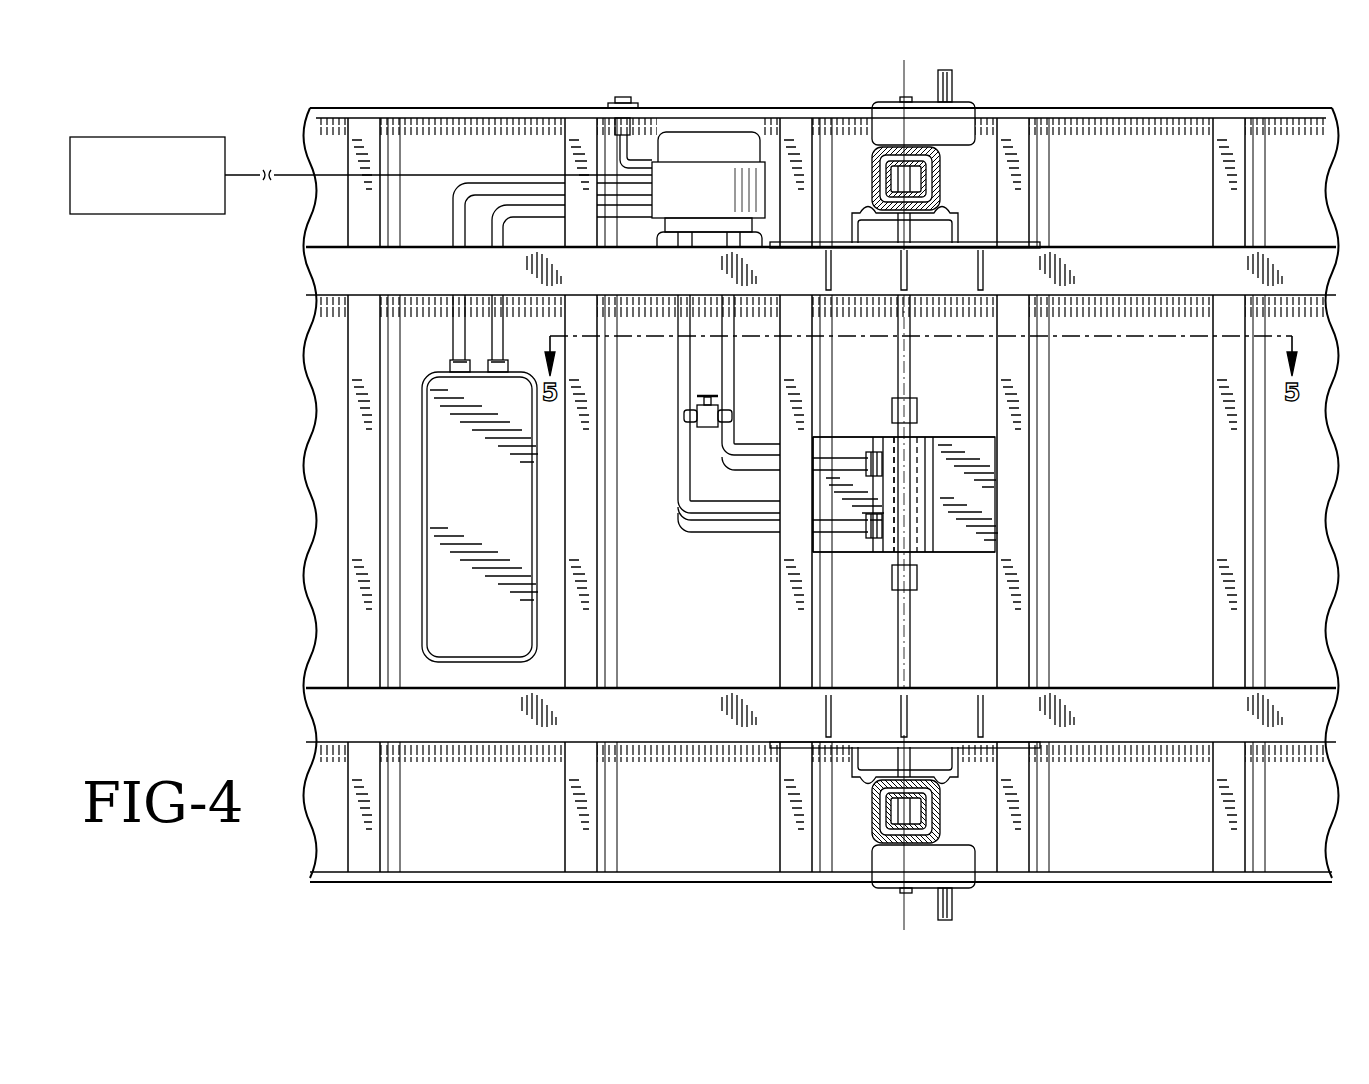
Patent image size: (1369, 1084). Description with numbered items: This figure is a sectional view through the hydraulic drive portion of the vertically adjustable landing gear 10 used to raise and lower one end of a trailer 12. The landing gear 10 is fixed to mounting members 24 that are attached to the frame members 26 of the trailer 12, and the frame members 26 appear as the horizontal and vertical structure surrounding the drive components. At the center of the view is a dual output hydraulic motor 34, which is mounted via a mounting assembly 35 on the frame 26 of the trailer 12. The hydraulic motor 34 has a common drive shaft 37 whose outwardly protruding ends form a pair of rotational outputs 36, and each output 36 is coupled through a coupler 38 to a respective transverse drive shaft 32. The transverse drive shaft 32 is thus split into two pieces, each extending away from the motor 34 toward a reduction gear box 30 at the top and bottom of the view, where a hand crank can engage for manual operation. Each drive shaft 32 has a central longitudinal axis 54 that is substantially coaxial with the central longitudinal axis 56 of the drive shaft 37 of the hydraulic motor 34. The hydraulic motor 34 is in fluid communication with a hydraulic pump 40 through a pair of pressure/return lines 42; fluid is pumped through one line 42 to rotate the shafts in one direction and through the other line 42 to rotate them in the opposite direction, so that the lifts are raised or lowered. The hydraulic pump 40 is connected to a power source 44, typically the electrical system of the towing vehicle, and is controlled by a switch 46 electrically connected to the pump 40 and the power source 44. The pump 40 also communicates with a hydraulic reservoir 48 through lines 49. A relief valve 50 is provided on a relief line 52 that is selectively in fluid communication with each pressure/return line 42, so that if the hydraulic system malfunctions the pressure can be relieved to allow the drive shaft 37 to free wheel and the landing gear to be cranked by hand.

The landing gear 10 is at (246, 113).
The trailer 12 is at (1130, 112).
The mounting members 24 is at (1015, 245).
The frame members 26 is at (1158, 262).
The reduction gear box 30 is at (958, 103).
The transverse drive shaft 32 is at (912, 385).
The dual output hydraulic motor 34 is at (927, 505).
The mounting assembly 35 is at (853, 552).
The rotational outputs 36 is at (913, 432).
The common drive shaft 37 is at (912, 480).
The coupler 38 is at (890, 410).
The hydraulic pump 40 is at (706, 150).
The pressure/return lines 42 is at (731, 458).
The power source 44 is at (150, 214).
The switch 46 is at (623, 100).
The hydraulic reservoir 48 is at (480, 478).
The lines 49 is at (535, 205).
The relief valve 50 is at (707, 396).
The relief line 52 is at (688, 416).
The central longitudinal axis 54 is at (904, 80).
The central longitudinal axis 56 is at (905, 515).